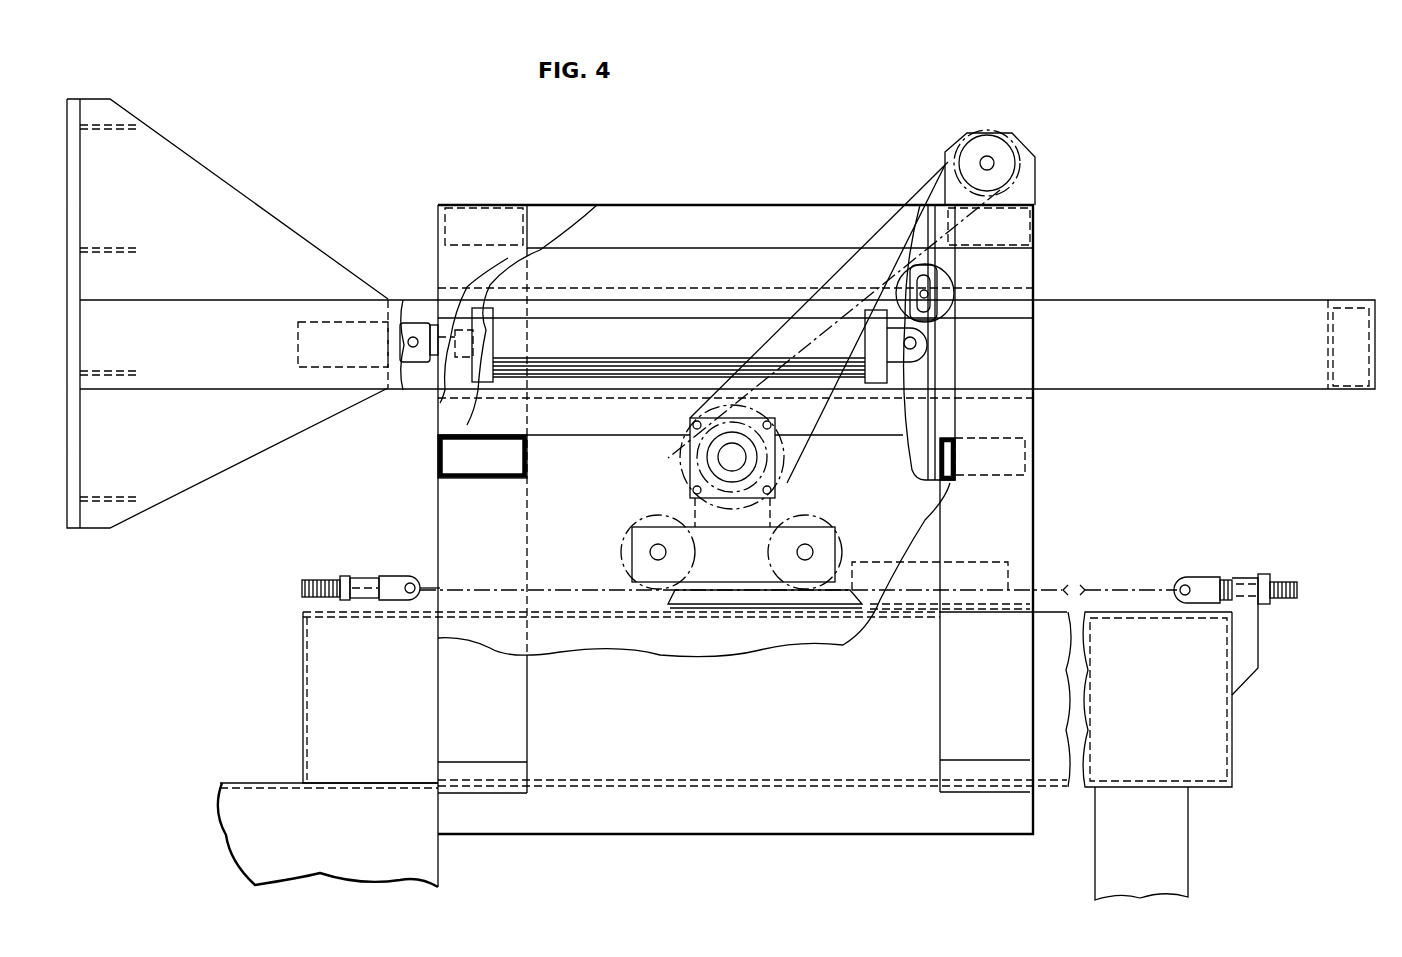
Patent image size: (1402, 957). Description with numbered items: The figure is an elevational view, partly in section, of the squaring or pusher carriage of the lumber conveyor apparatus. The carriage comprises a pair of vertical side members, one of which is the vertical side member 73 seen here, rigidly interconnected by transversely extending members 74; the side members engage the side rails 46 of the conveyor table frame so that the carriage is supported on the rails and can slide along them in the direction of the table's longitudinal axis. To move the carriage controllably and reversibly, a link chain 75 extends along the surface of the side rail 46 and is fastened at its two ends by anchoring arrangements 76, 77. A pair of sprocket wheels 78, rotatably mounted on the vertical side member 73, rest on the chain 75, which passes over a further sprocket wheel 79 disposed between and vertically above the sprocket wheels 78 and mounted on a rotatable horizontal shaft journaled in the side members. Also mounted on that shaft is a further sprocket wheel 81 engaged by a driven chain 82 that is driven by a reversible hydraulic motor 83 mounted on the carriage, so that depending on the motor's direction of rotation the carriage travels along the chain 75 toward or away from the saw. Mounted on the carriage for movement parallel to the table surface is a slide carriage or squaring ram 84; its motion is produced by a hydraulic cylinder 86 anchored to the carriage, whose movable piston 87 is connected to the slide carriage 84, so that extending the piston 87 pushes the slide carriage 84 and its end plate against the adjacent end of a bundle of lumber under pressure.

The side rail 46 is at (386, 722).
The vertical side member 73 is at (823, 723).
The transversely extending members 74 is at (493, 479).
The link chain 75 is at (770, 515).
The anchoring arrangement 76 is at (1198, 583).
The anchoring arrangement 77 is at (393, 582).
The sprocket wheels 78 is at (641, 526).
The further sprocket wheel 79 is at (778, 476).
The further sprocket wheel 81 is at (688, 456).
The driven chain 82 is at (928, 182).
The reversible hydraulic motor 83 is at (980, 150).
The slide carriage 84 is at (258, 218).
The hydraulic cylinder 86 is at (698, 352).
The piston 87 is at (445, 306).